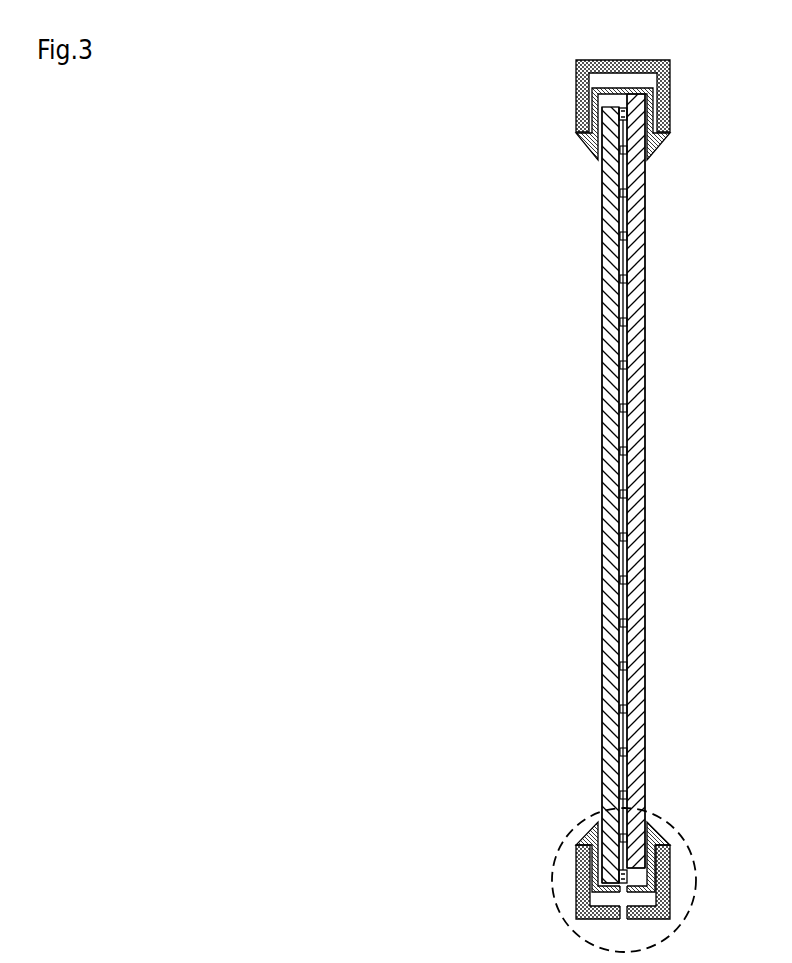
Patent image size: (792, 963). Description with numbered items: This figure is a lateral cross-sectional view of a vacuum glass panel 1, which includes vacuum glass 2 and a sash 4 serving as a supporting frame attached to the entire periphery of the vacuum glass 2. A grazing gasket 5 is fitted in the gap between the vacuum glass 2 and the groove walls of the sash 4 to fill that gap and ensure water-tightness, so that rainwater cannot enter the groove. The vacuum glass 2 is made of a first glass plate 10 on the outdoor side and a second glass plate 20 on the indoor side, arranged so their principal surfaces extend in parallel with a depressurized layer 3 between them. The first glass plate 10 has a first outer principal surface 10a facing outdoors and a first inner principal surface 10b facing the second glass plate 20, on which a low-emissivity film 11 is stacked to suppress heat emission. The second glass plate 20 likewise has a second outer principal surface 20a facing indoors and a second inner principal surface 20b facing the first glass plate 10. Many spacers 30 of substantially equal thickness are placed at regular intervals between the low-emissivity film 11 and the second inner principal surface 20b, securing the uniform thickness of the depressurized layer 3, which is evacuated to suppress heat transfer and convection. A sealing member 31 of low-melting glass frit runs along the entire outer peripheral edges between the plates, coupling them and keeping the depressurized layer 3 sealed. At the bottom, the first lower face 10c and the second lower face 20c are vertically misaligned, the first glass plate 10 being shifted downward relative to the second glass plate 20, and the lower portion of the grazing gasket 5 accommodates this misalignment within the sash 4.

The vacuum glass panel 1 is at (422, 200).
The vacuum glass 2 is at (670, 177).
The depressurized layer 3 is at (638, 762).
The sash 4 is at (638, 62).
The grazing gasket 5 is at (660, 143).
The first glass plate 10 is at (592, 245).
The first outer principal surface 10a is at (602, 310).
The first inner principal surface 10b is at (620, 303).
The first lower face 10c is at (601, 884).
The low-emissivity film 11 is at (625, 433).
The second glass plate 20 is at (657, 244).
The second outer principal surface 20a is at (646, 373).
The second inner principal surface 20b is at (624, 383).
The second lower face 20c is at (648, 870).
The spacers 30 is at (628, 538).
The sealing member 31 is at (620, 114).